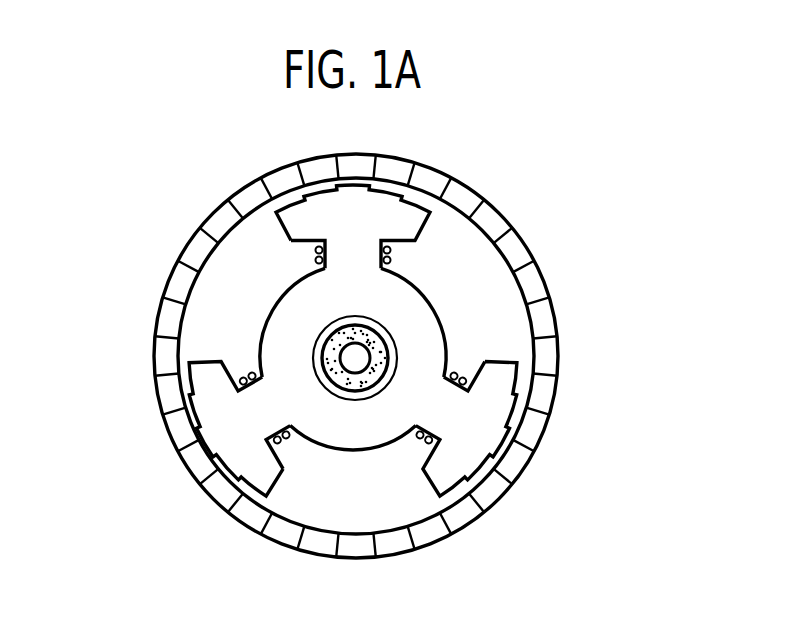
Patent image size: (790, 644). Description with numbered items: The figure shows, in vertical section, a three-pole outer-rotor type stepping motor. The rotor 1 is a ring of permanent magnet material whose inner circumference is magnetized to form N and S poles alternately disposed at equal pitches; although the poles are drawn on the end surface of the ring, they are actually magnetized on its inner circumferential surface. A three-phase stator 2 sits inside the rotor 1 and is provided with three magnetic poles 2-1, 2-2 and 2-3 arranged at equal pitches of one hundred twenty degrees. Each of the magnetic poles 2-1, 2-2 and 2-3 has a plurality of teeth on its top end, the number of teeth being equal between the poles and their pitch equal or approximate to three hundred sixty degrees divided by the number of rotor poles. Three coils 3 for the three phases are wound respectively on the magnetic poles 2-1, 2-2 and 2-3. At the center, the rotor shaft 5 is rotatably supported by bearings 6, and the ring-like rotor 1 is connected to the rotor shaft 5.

The rotor 1 is at (488, 207).
The stator 2 is at (470, 305).
The magnetic pole 2-1 is at (285, 228).
The magnetic pole 2-2 is at (210, 362).
The magnetic pole 2-3 is at (493, 375).
The coils 3 is at (392, 258).
The rotor shaft 5 is at (358, 360).
The bearings 6 is at (340, 377).